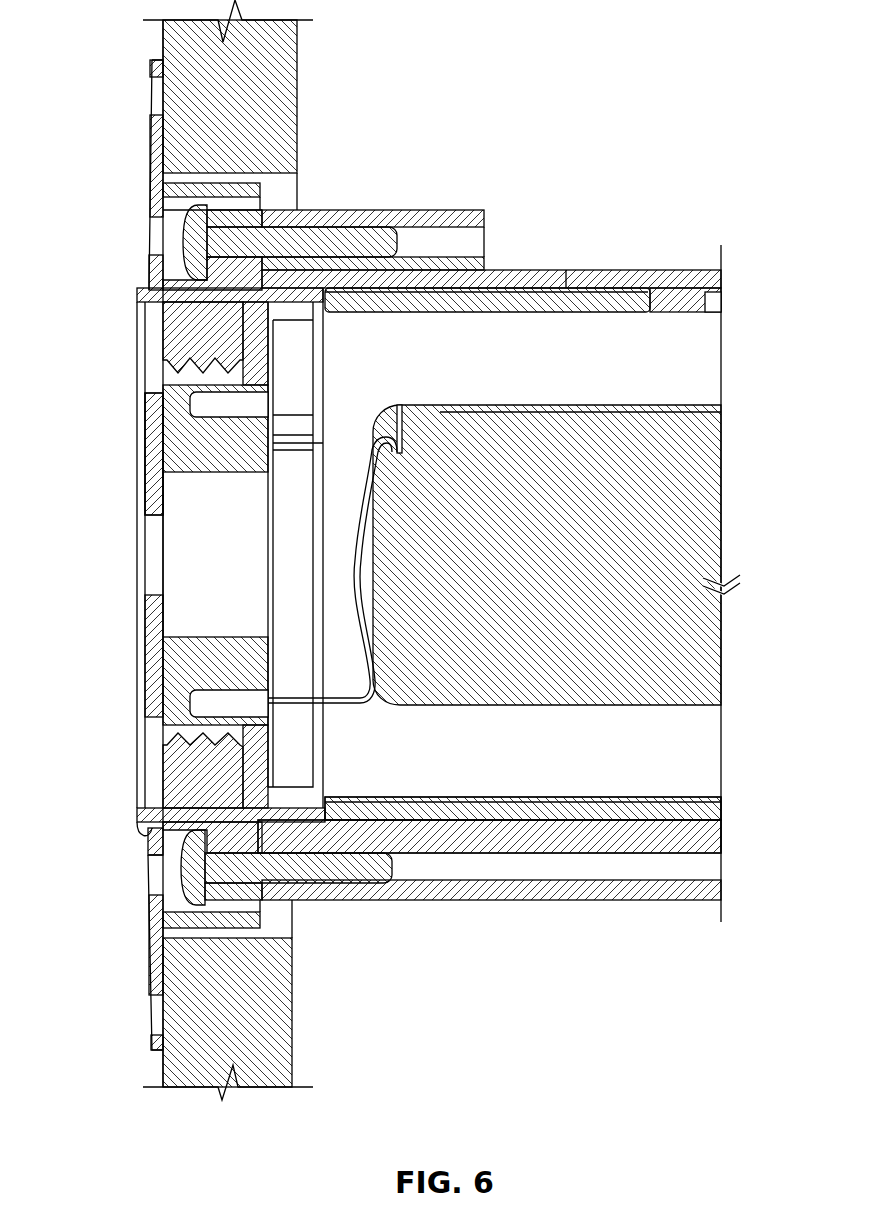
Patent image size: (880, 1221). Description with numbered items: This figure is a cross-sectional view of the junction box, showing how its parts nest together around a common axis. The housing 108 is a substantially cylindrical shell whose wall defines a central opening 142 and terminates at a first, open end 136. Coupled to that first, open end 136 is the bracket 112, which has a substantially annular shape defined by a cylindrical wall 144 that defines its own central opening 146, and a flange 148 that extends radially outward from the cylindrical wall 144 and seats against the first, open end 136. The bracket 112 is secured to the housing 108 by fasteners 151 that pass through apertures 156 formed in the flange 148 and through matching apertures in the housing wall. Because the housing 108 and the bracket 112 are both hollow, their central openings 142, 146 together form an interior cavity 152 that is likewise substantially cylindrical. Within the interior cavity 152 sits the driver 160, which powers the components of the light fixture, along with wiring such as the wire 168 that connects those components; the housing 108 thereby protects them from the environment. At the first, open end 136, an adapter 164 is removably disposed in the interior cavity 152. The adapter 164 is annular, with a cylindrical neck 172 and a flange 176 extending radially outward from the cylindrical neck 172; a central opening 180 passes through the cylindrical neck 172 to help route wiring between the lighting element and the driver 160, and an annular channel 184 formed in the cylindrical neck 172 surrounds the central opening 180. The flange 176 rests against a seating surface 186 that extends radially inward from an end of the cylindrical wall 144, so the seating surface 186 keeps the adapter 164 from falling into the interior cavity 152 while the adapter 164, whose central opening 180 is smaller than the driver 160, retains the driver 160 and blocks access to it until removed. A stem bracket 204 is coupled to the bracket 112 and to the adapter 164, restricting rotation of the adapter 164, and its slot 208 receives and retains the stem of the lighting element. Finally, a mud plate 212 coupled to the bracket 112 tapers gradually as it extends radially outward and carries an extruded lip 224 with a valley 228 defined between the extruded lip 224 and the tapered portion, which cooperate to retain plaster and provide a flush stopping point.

The housing 108 is at (672, 900).
The bracket 112 is at (238, 216).
The first, open end 136 is at (407, 217).
The central opening 142 is at (680, 770).
The interior cavity 152 is at (523, 808).
The cylindrical wall 144 is at (255, 817).
The central opening 146 is at (489, 836).
The flange 148 is at (225, 883).
The fasteners 151 is at (370, 240).
The apertures 156 is at (215, 222).
The driver 160 is at (677, 553).
The adapter 164 is at (152, 664).
The wire 168 is at (357, 575).
The cylindrical neck 172 is at (175, 428).
The flange 176 is at (243, 337).
The central opening 180 is at (182, 480).
The annular channel 184 is at (190, 407).
The seating surface 186 is at (330, 304).
The stem bracket 204 is at (152, 596).
The slot 208 is at (154, 454).
The mud plate 212 is at (150, 936).
The extruded lip 224 is at (137, 813).
The valley 228 is at (152, 832).